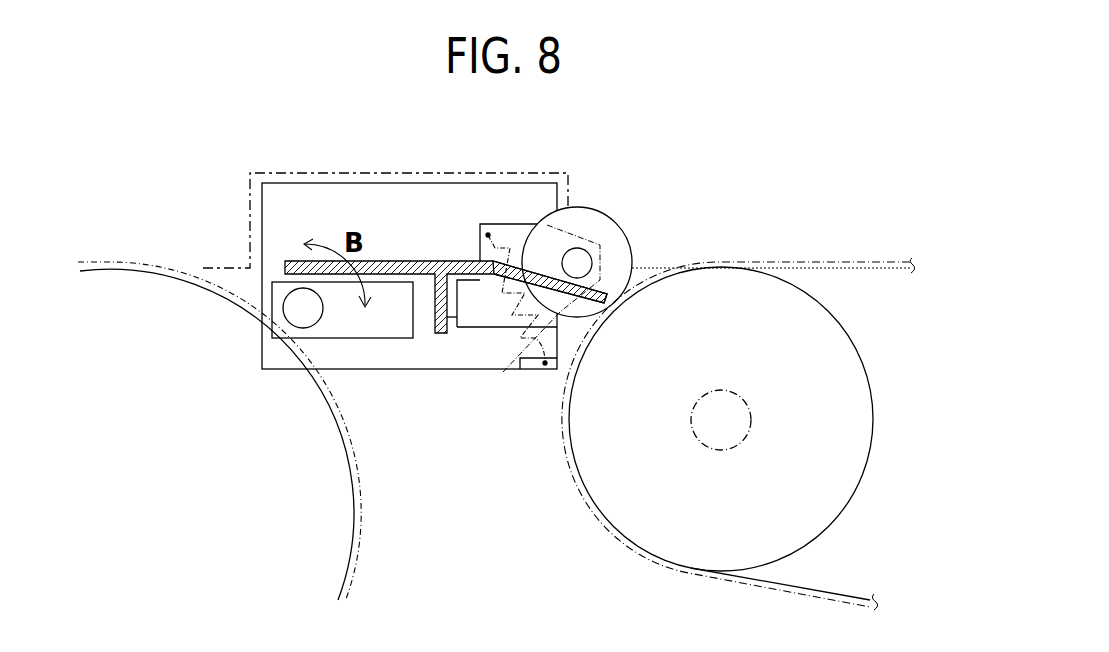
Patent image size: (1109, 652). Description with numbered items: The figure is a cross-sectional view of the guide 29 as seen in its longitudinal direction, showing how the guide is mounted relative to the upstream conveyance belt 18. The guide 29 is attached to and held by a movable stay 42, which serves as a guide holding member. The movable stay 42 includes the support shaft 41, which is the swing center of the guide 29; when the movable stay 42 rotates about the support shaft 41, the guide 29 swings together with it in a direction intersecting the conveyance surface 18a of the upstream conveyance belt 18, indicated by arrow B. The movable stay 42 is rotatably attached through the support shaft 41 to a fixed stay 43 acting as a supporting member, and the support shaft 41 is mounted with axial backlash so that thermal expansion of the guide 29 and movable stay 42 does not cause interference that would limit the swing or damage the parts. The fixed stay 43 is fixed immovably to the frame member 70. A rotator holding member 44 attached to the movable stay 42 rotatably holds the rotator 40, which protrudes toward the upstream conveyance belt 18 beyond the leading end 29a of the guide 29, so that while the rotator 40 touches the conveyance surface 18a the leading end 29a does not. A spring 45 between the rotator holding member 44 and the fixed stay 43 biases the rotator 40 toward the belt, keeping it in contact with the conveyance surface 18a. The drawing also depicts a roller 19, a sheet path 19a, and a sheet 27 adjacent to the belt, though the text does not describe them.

The upstream conveyance belt 18 is at (863, 262).
The conveyance surface 18a is at (745, 262).
The roller 19 is at (162, 270).
The sheet on roller 19a is at (97, 262).
The sheet 27 is at (657, 545).
The guide 29 is at (487, 232).
The leading end 29a is at (632, 248).
The rotator 40 is at (592, 220).
The support shaft 41 is at (302, 315).
The movable stay 42 is at (375, 343).
The fixed stay 43 is at (440, 372).
The rotator holding member 44 is at (507, 224).
The spring 45 is at (512, 340).
The frame member 70 is at (428, 172).